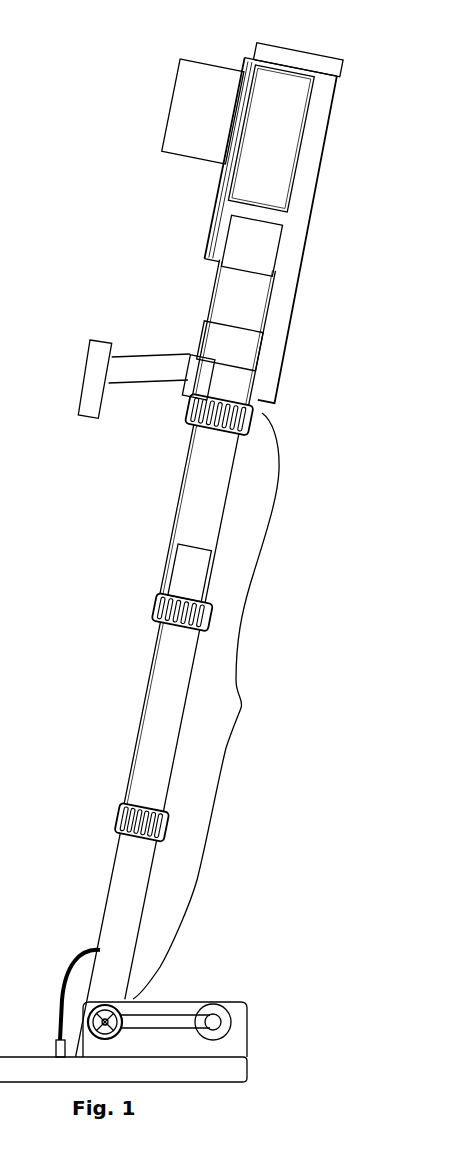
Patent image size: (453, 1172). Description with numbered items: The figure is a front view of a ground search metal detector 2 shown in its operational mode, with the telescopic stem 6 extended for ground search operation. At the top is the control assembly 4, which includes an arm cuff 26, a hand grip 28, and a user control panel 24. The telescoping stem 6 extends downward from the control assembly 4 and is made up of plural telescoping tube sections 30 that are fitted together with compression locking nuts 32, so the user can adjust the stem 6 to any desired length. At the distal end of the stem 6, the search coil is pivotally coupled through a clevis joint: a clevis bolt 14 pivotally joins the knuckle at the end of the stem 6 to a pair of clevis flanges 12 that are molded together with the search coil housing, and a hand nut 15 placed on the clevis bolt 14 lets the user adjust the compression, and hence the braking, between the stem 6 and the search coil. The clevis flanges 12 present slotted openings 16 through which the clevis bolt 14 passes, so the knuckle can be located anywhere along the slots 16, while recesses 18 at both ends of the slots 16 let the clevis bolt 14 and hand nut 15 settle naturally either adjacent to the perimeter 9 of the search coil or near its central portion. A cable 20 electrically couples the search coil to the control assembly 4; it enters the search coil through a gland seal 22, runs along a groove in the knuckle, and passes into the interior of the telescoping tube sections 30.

The ground search metal detector 2 is at (61, 627).
The control assembly 4 is at (312, 251).
The telescoping stem 6 is at (243, 707).
The perimeter 9 is at (244, 1071).
The clevis flanges 12 is at (248, 1009).
The clevis bolt 14 is at (100, 1004).
The hand nut 15 is at (90, 1019).
The slotted openings 16 is at (180, 1015).
The recesses 18 is at (230, 1034).
The cable 20 is at (78, 950).
The gland seal 22 is at (57, 1052).
The user control panel 24 is at (85, 372).
The arm cuff 26 is at (180, 58).
The hand grip 28 is at (158, 352).
The telescoping tube sections 30 is at (210, 308).
The compression locking nuts 32 is at (188, 419).